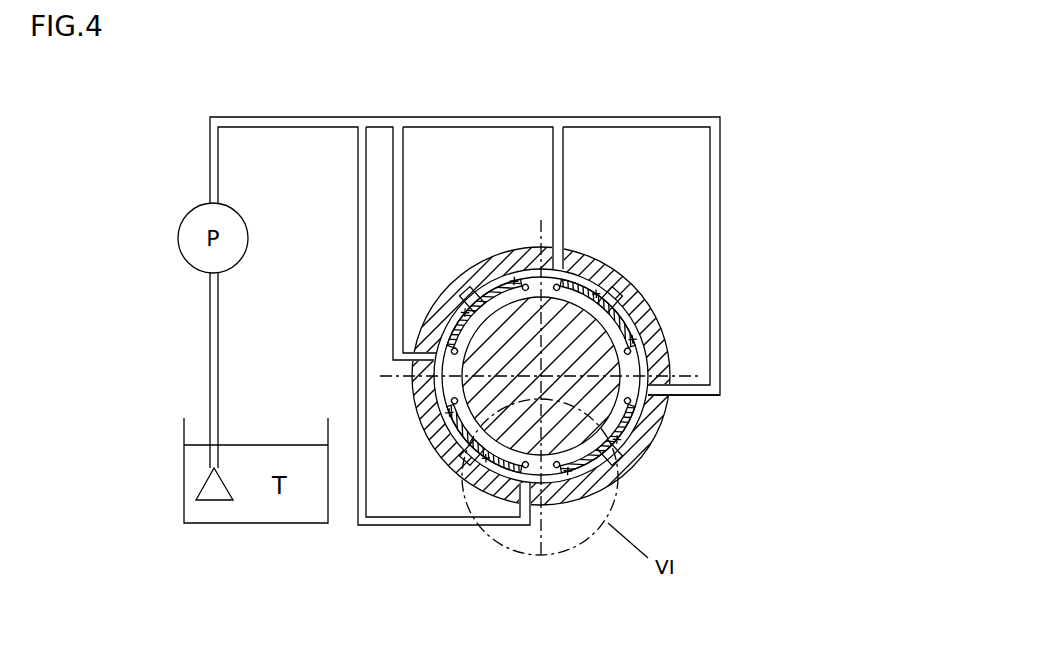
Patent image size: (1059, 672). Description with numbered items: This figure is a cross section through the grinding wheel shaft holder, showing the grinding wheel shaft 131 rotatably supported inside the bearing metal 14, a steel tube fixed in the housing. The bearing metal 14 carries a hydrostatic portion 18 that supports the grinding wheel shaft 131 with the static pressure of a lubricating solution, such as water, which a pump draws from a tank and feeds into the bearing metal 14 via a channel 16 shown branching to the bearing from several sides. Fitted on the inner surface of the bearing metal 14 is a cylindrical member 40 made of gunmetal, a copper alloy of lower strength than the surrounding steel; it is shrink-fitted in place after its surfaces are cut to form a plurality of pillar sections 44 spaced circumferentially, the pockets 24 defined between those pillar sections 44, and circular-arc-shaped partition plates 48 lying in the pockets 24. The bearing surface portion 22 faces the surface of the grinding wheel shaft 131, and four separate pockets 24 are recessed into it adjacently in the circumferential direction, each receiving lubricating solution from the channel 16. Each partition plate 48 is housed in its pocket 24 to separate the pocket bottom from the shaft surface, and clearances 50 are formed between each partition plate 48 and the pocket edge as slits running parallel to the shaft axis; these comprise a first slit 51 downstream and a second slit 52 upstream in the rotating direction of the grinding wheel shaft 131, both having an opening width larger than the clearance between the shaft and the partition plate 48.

The bearing metal 14 is at (618, 333).
The channel 16 is at (722, 181).
The hydrostatic portion 18 is at (538, 392).
The bearing surface portion 22 is at (583, 287).
The pocket 24 is at (524, 296).
The cylindrical member 40 is at (620, 273).
The pillar section 44 is at (457, 297).
The partition plate 48 is at (569, 272).
The clearance 50 is at (538, 395).
The first slit 51 is at (477, 300).
The second slit 52 is at (611, 294).
The grinding wheel shaft 131 is at (695, 400).